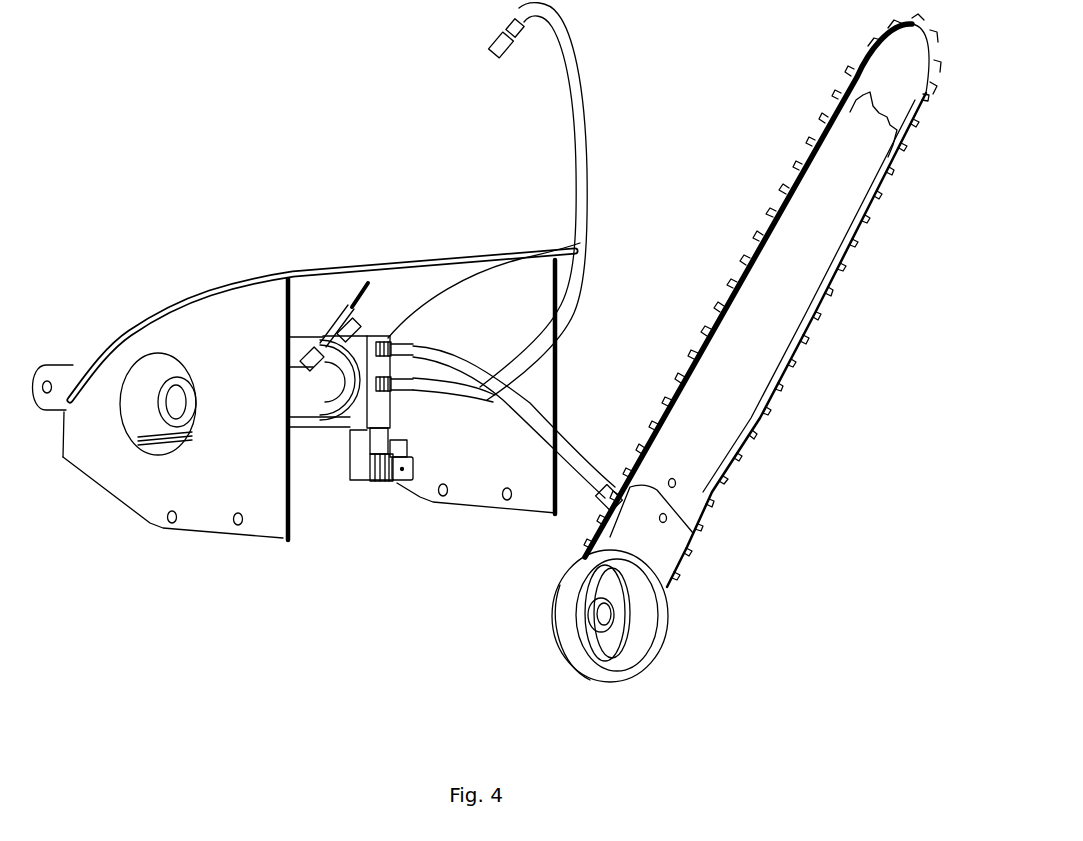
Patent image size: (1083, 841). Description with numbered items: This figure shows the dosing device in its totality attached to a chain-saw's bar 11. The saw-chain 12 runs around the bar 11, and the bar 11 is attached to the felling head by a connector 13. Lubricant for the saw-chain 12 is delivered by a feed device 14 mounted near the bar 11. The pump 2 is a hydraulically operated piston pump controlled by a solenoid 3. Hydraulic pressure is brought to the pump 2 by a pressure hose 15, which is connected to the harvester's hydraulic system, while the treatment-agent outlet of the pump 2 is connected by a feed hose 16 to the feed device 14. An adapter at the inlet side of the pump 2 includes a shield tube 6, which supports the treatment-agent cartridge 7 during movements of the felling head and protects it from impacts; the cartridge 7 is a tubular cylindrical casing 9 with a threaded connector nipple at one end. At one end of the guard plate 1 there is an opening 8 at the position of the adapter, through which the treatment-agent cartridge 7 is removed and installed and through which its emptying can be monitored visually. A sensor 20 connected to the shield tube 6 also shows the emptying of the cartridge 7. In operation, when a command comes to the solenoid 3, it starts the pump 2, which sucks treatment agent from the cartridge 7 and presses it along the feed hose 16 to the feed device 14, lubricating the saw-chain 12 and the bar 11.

The guard plate 1 is at (308, 272).
The pump 2 is at (343, 440).
The solenoid 3 is at (397, 483).
The shield tube 6 is at (320, 395).
The treatment-agent cartridge 7 is at (162, 402).
The opening 8 is at (178, 412).
The tubular cylindrical casing 9 is at (138, 438).
The bar 11 is at (800, 287).
The saw-chain 12 is at (762, 222).
The connector 13 is at (660, 637).
The feed device 14 is at (687, 555).
The pressure hose 15 is at (587, 163).
The feed hose 16 is at (567, 447).
The sensor 20 is at (322, 340).